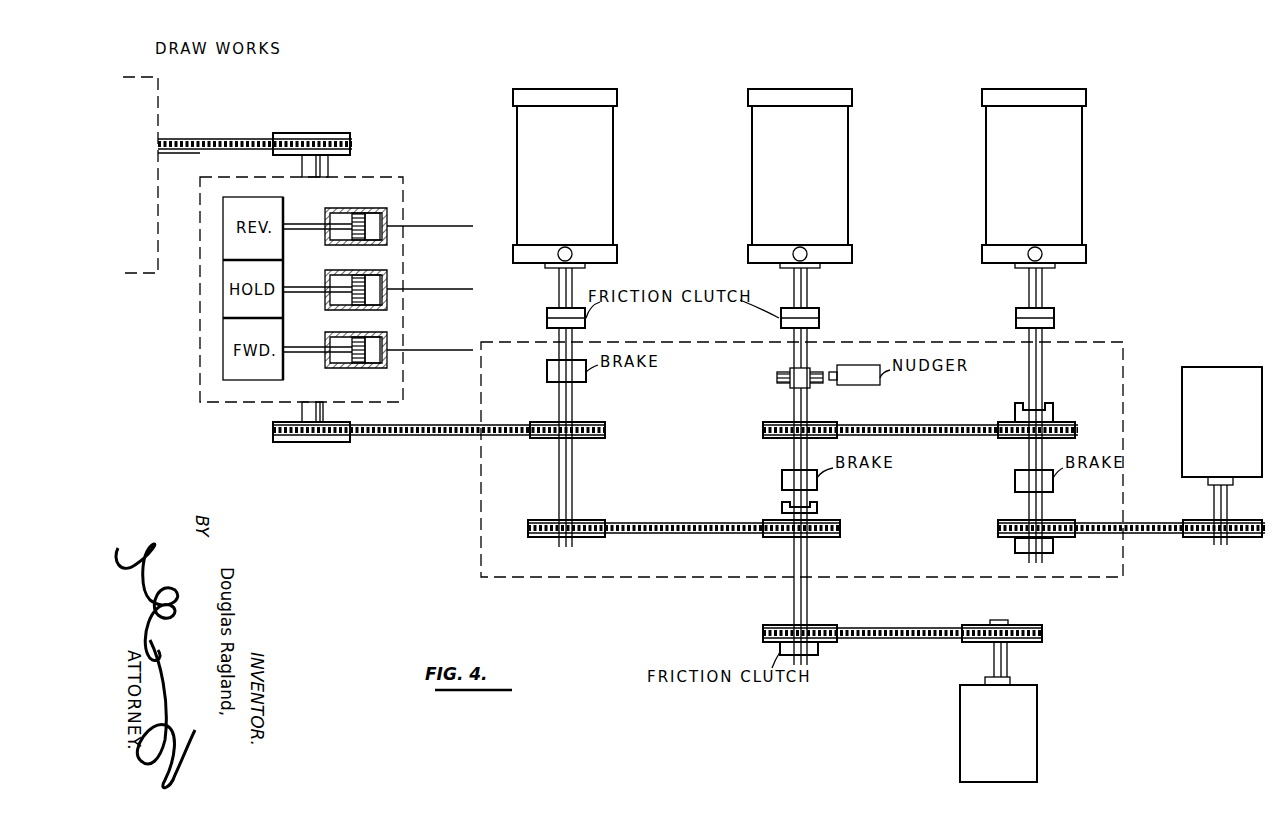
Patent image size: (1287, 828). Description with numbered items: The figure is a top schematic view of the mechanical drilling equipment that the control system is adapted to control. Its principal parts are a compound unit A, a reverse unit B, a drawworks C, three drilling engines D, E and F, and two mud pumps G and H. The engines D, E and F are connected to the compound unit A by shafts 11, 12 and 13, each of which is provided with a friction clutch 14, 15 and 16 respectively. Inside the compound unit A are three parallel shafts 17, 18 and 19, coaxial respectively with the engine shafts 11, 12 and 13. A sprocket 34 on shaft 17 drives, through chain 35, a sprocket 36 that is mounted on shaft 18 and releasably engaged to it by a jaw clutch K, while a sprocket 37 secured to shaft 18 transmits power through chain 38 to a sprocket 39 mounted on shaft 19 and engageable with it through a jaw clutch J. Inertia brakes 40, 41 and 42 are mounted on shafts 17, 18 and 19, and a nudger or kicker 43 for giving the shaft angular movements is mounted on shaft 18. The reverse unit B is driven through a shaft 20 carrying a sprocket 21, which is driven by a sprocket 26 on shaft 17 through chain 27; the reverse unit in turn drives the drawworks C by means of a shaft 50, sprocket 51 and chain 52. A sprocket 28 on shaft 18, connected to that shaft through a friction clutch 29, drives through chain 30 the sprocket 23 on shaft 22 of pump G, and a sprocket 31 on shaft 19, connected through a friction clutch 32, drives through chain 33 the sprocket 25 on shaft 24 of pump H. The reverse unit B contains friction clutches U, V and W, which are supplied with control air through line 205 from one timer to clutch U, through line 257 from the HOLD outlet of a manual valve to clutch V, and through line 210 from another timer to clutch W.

The shaft 11 is at (566, 292).
The shaft 12 is at (801, 292).
The shaft 13 is at (1037, 292).
The friction clutch 14 is at (550, 316).
The friction clutch 15 is at (816, 318).
The friction clutch 16 is at (1022, 316).
The shaft 17 is at (573, 400).
The shaft 18 is at (795, 400).
The shaft 19 is at (1031, 375).
The shaft 20 is at (301, 411).
The sprocket 21 is at (320, 445).
The shaft 22 is at (1007, 657).
The sprocket 23 is at (1025, 627).
The shaft 24 is at (1228, 506).
The sprocket 25 is at (1240, 540).
The sprocket 26 is at (545, 440).
The chain 27 is at (478, 425).
The sprocket 28 is at (780, 625).
The friction clutch 29 is at (818, 650).
The chain 30 is at (915, 627).
The sprocket 31 is at (1018, 520).
The friction clutch 32 is at (1022, 545).
The chain 33 is at (1162, 535).
The sprocket 34 is at (553, 520).
The chain 35 is at (706, 520).
The sprocket 36 is at (836, 520).
The sprocket 37 is at (828, 423).
The chain 38 is at (936, 424).
The sprocket 39 is at (1015, 422).
The inertia brake 40 is at (553, 369).
The inertia brake 41 is at (788, 474).
The inertia brake 42 is at (1022, 476).
The nudger 43 is at (862, 385).
The shaft 50 is at (321, 168).
The sprocket 51 is at (320, 133).
The chain 52 is at (235, 137).
The line 205 is at (460, 350).
The line 210 is at (460, 226).
The line 257 is at (460, 289).
The compound unit A is at (518, 577).
The reverse unit B is at (213, 402).
The drawworks C is at (147, 97).
The drilling engine D is at (565, 178).
The drilling engine E is at (800, 178).
The drilling engine F is at (1034, 178).
The mud pump G is at (998, 729).
The mud pump H is at (1222, 426).
The jaw clutch J is at (1053, 405).
The jaw clutch K is at (792, 502).
The friction clutch U is at (335, 332).
The friction clutch V is at (335, 270).
The friction clutch W is at (342, 208).